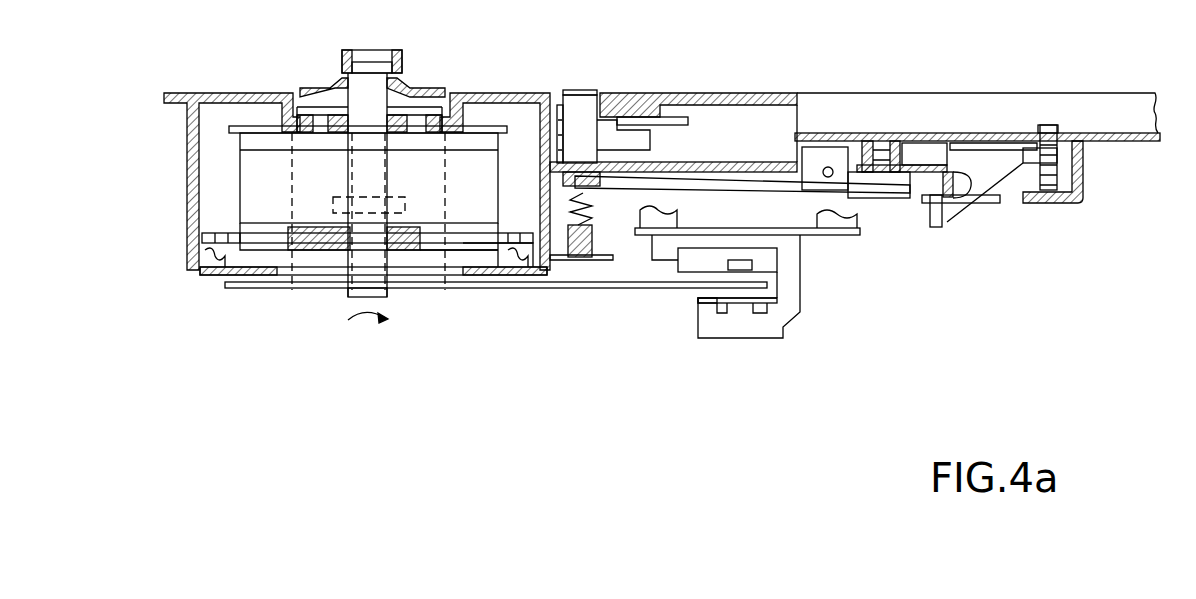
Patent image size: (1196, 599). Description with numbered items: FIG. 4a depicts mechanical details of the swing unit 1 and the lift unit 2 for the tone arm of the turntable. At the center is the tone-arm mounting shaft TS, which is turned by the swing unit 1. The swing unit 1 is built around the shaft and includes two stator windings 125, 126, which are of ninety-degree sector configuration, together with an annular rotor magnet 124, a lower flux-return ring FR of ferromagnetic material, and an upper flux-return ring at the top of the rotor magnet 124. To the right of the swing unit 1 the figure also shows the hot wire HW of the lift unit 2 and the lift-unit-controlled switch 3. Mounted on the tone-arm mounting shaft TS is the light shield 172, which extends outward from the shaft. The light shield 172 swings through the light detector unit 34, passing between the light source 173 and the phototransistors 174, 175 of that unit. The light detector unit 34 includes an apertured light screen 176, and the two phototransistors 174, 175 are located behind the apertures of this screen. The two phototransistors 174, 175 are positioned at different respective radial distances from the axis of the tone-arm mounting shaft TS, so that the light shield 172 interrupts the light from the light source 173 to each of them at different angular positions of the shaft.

The swing unit 1 is at (157, 150).
The rotor magnet 124 is at (252, 178).
The stator winding 125 is at (220, 265).
The stator winding 126 is at (531, 257).
The tone-arm mounting shaft TS is at (345, 292).
The lower flux-return ring FR is at (458, 260).
The light shield 172 is at (598, 290).
The light source 173 is at (748, 263).
The phototransistor 174 is at (760, 315).
The phototransistor 175 is at (720, 315).
The apertured light screen 176 is at (695, 300).
The light detector unit 34 is at (753, 303).
The hot wire HW is at (888, 198).
The lift unit 2 is at (612, 202).
The lift-unit-controlled switch 3 is at (645, 120).